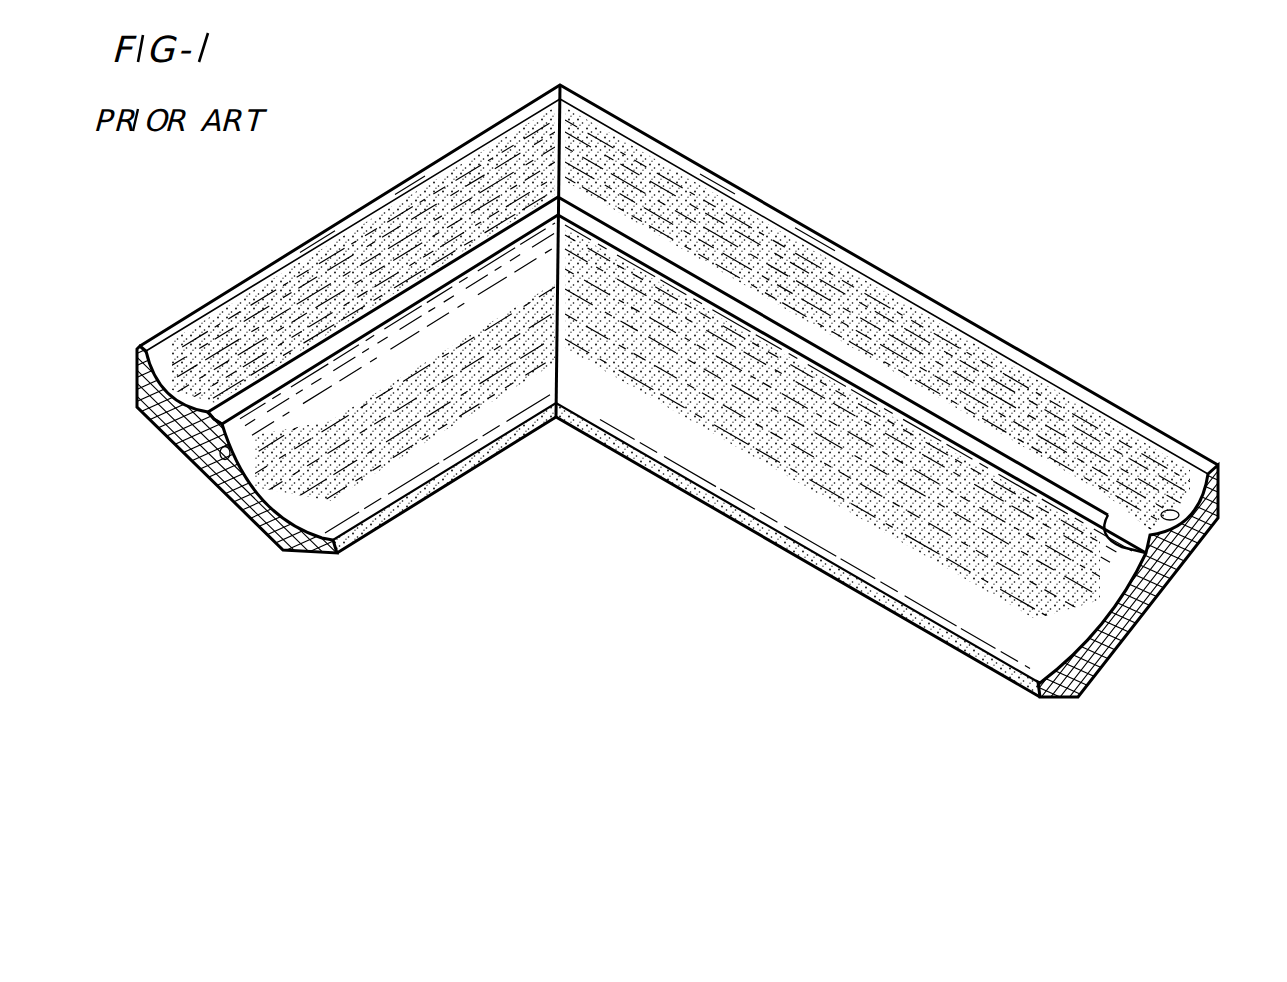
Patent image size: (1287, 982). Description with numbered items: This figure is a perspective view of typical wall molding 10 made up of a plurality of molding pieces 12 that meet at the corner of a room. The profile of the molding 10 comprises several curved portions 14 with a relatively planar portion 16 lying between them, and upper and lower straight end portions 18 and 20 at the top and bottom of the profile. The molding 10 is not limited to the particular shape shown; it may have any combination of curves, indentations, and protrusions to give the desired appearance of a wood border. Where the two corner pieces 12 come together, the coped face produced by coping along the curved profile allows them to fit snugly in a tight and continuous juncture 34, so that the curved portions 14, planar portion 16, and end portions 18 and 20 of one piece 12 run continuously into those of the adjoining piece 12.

The molding 10 is at (846, 182).
The molding piece 12 is at (370, 192).
The curved portion 14 is at (373, 305).
The planar portion 16 is at (220, 468).
The upper straight end portion 18 is at (146, 342).
The lower straight end portion 20 is at (343, 553).
The juncture 34 is at (566, 152).